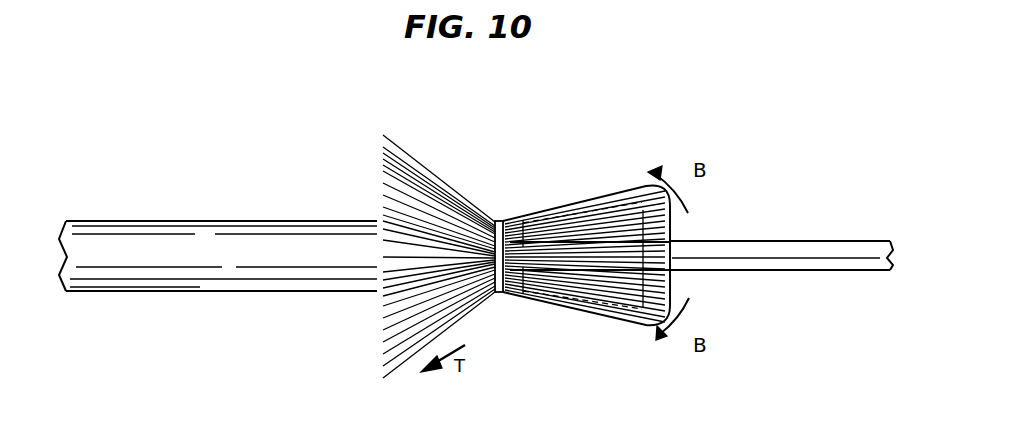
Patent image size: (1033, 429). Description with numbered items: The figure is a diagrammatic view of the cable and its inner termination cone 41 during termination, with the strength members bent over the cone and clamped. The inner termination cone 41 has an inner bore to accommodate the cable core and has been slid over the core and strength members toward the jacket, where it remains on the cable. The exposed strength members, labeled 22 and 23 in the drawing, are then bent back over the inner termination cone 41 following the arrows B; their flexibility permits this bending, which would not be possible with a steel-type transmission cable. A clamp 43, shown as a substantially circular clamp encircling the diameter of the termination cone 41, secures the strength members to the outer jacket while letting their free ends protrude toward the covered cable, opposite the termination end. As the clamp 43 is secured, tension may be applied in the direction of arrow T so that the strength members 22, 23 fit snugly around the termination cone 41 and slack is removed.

The cable 22 is at (402, 151).
The fibers 23 is at (431, 176).
The clamp 43 is at (503, 200).
The inner termination cone 41 is at (582, 200).